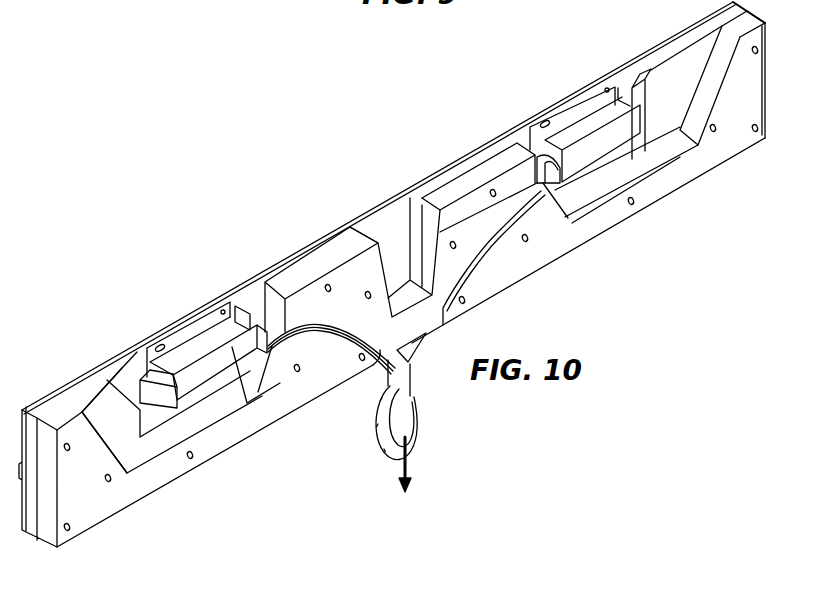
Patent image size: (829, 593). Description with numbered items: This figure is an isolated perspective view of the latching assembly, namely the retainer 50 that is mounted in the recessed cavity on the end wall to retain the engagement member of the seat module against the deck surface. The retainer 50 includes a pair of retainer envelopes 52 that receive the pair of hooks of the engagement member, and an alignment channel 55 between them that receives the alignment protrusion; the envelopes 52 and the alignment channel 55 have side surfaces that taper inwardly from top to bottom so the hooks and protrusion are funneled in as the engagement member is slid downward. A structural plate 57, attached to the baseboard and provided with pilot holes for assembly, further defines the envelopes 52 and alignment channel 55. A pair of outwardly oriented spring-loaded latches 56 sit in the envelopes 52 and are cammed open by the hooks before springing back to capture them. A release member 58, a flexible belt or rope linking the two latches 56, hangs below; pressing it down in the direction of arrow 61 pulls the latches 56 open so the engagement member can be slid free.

The retainer 50 is at (273, 450).
The retainer envelopes 52 is at (243, 298).
The alignment channel 55 is at (386, 214).
The spring-loaded latches 56 is at (197, 350).
The structural plate 57 is at (135, 362).
The release member 58 is at (386, 418).
The arrow 61 is at (415, 458).